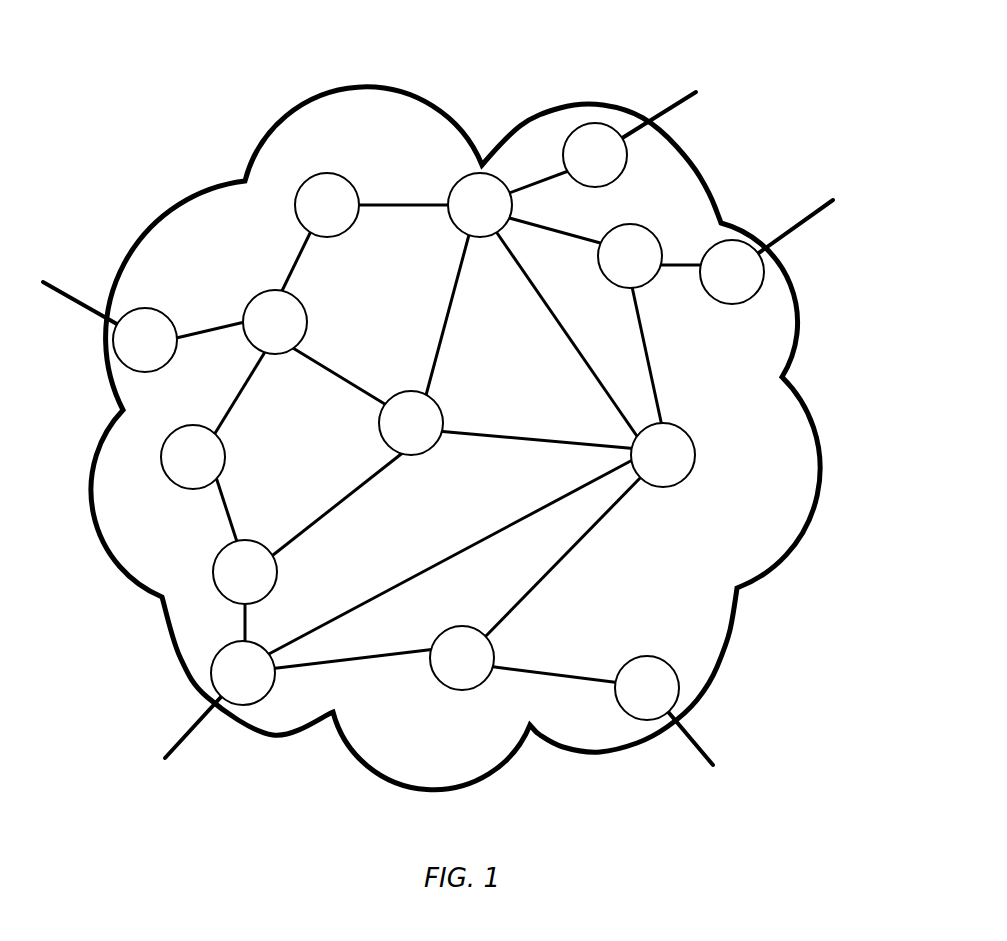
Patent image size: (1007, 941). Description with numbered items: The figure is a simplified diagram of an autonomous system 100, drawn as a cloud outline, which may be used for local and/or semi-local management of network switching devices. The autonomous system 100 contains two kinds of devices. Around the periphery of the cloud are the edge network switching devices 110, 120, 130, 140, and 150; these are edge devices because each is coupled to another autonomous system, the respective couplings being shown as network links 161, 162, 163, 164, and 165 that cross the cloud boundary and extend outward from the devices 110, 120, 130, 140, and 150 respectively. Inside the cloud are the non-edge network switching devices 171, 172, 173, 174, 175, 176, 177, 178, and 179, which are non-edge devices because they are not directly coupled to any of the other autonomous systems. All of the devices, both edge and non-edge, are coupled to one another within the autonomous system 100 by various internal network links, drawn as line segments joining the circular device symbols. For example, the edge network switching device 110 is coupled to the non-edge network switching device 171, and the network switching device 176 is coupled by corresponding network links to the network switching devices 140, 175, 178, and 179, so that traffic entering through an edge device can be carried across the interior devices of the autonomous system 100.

The autonomous system 100 is at (388, 84).
The network switching device 110 is at (647, 688).
The network switching device 120 is at (243, 673).
The network switching device 130 is at (145, 340).
The network switching device 140 is at (595, 155).
The network switching device 150 is at (732, 272).
The network link 161 is at (703, 751).
The network link 162 is at (180, 731).
The network link 163 is at (63, 291).
The network link 164 is at (669, 97).
The network link 165 is at (797, 217).
The network switching device 171 is at (462, 658).
The network switching device 172 is at (245, 572).
The network switching device 173 is at (193, 457).
The network switching device 174 is at (275, 322).
The network switching device 175 is at (327, 205).
The network switching device 176 is at (480, 205).
The network switching device 177 is at (411, 423).
The network switching device 178 is at (630, 256).
The network switching device 179 is at (663, 455).